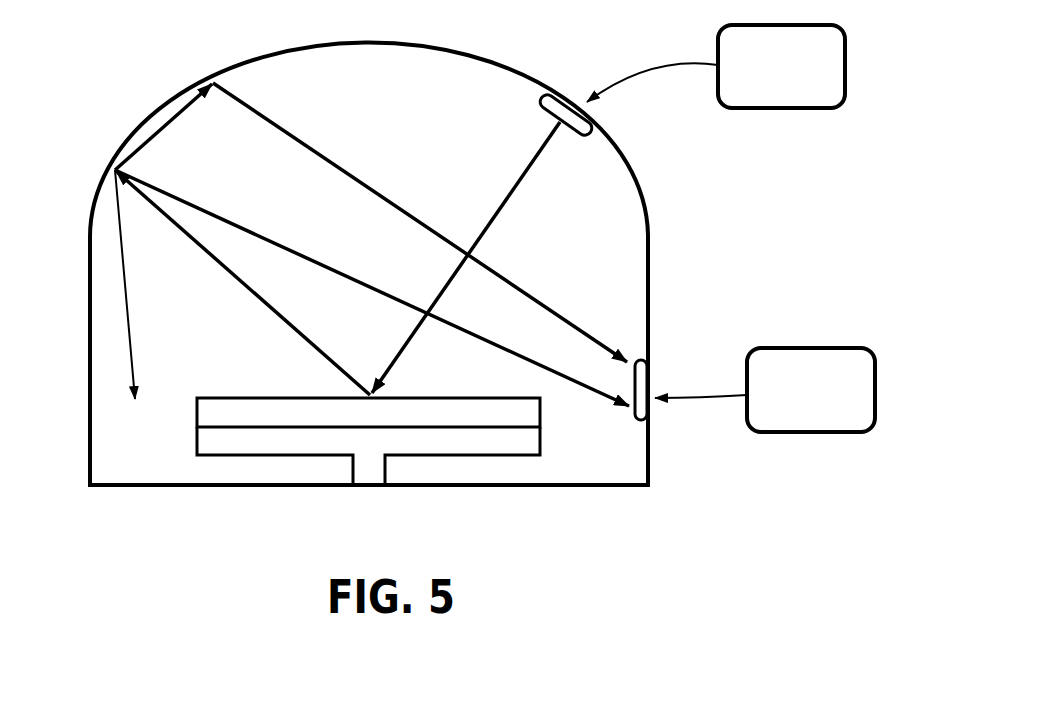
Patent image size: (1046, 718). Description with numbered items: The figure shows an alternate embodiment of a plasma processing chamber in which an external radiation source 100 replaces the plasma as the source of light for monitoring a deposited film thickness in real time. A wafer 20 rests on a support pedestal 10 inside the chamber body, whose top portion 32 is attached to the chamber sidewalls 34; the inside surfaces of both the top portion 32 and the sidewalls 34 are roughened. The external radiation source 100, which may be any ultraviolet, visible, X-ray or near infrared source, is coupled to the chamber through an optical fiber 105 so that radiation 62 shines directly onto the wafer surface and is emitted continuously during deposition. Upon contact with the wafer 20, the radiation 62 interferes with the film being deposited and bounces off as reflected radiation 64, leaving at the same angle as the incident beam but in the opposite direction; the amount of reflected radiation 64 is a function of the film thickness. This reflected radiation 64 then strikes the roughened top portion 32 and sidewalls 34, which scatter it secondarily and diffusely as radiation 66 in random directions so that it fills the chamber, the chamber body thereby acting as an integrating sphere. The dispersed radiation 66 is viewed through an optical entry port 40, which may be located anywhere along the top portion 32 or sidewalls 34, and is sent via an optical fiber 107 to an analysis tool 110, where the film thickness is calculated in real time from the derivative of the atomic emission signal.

The support pedestal 10 is at (258, 443).
The wafer 20 is at (258, 410).
The top portion 32 is at (478, 62).
The chamber sidewalls 34 is at (90, 390).
The optical entry port 40 is at (650, 382).
The radiation 62 is at (534, 158).
The reflected radiation 64 is at (252, 296).
The diffusely reflected radiation 66 is at (163, 131).
The external radiation source 100 is at (803, 108).
The optical fiber 105 is at (682, 70).
The optical fiber 107 is at (722, 396).
The analysis tool 110 is at (817, 432).